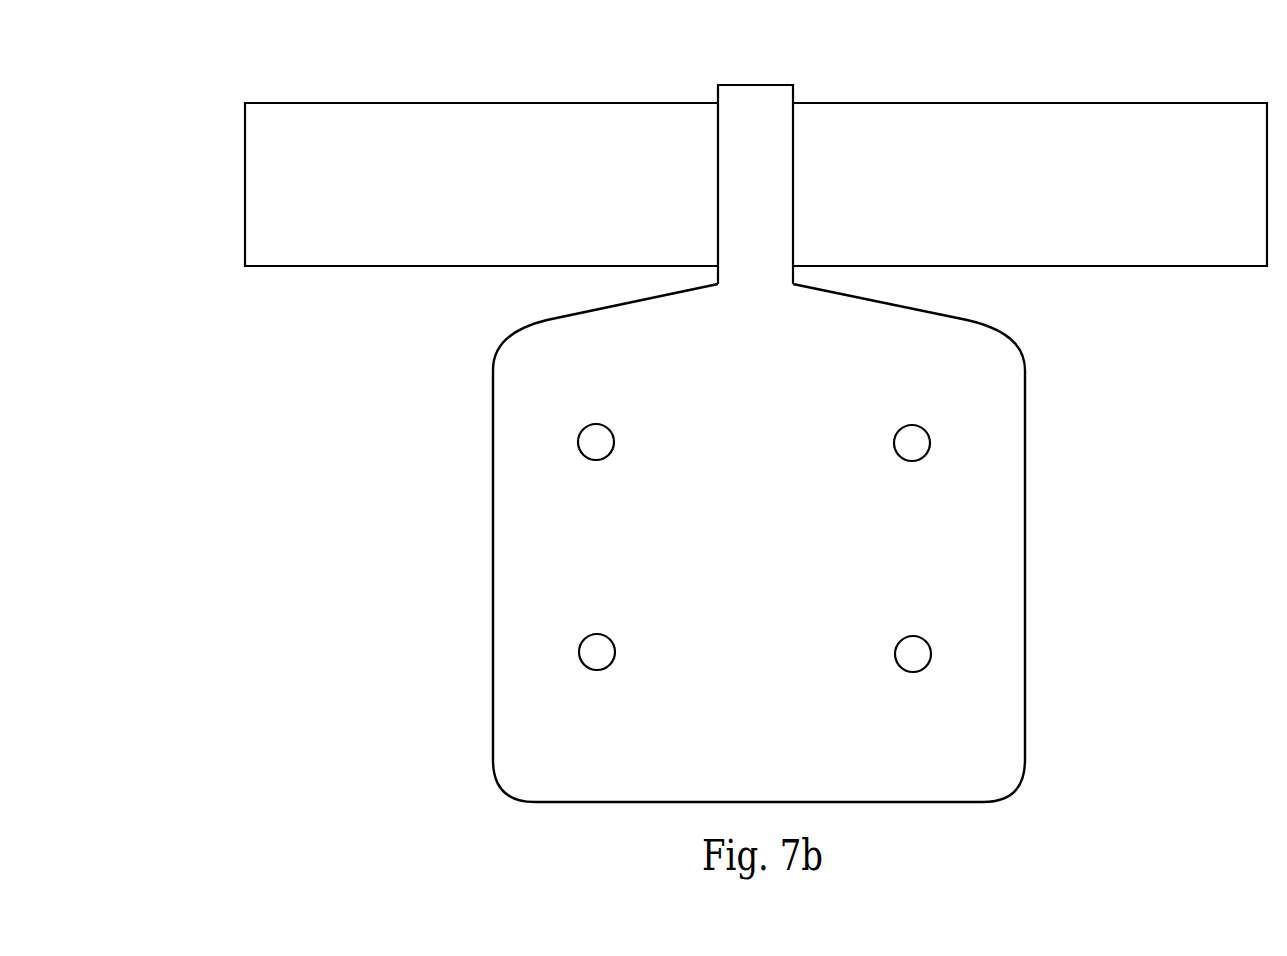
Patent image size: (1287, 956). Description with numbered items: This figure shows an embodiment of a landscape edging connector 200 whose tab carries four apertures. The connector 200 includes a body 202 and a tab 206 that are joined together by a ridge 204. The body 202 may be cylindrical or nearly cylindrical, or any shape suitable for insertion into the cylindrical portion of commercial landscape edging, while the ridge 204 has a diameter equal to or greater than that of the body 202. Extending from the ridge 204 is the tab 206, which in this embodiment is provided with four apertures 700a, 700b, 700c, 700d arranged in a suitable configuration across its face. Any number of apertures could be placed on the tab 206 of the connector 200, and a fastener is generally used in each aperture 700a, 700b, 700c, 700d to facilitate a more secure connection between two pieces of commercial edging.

The landscape edging connector 200 is at (756, 403).
The body 202 is at (480, 204).
The ridge 204 is at (755, 115).
The tab 206 is at (778, 554).
The aperture 700a is at (593, 444).
The aperture 700b is at (913, 443).
The aperture 700c is at (595, 650).
The aperture 700d is at (915, 650).